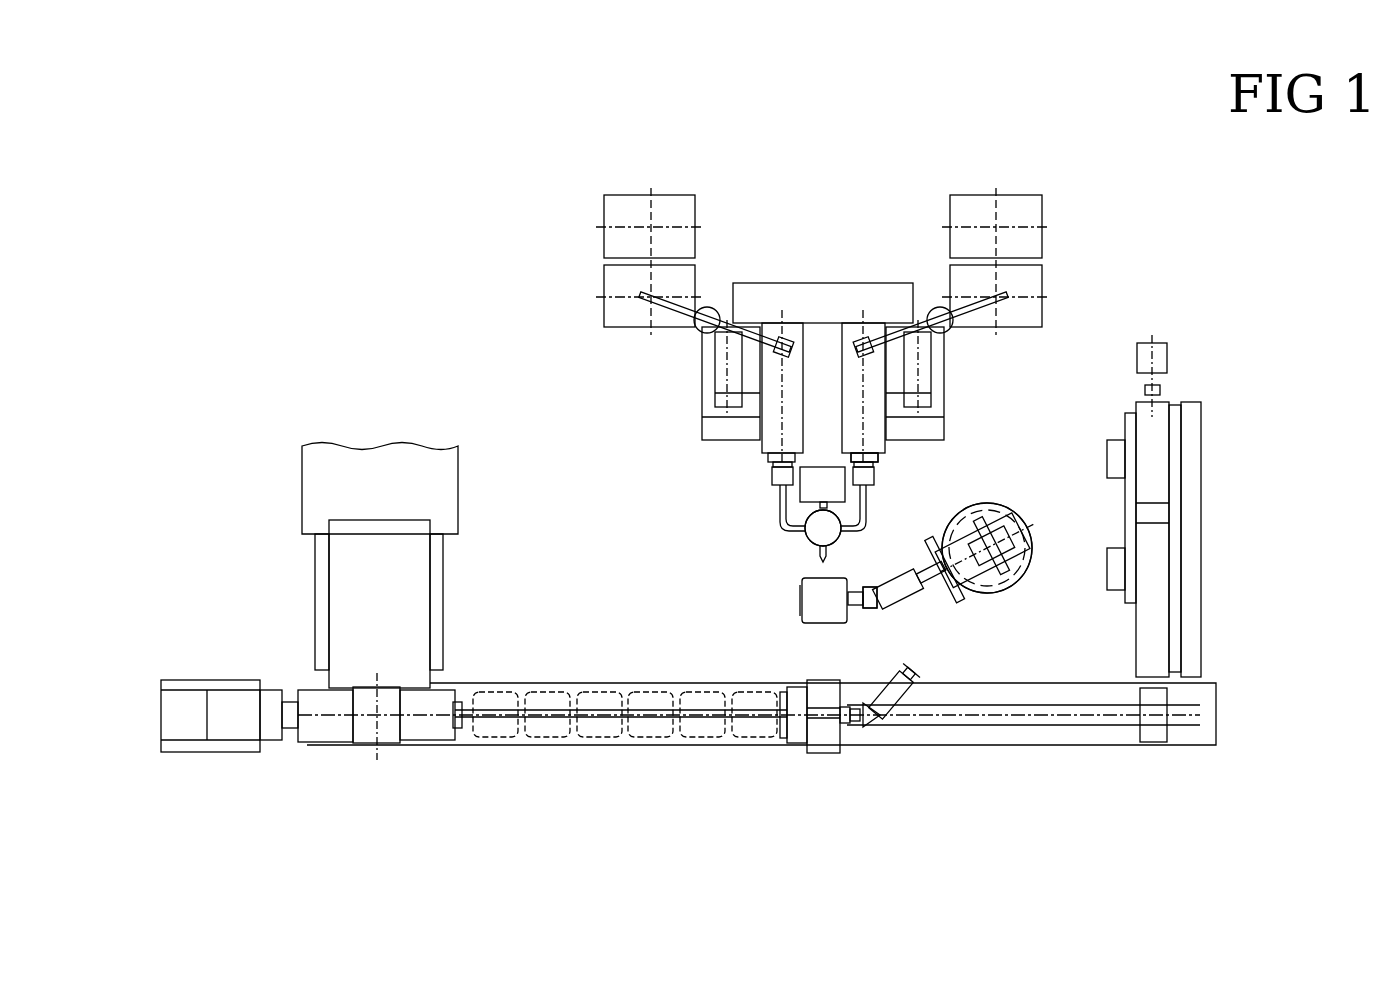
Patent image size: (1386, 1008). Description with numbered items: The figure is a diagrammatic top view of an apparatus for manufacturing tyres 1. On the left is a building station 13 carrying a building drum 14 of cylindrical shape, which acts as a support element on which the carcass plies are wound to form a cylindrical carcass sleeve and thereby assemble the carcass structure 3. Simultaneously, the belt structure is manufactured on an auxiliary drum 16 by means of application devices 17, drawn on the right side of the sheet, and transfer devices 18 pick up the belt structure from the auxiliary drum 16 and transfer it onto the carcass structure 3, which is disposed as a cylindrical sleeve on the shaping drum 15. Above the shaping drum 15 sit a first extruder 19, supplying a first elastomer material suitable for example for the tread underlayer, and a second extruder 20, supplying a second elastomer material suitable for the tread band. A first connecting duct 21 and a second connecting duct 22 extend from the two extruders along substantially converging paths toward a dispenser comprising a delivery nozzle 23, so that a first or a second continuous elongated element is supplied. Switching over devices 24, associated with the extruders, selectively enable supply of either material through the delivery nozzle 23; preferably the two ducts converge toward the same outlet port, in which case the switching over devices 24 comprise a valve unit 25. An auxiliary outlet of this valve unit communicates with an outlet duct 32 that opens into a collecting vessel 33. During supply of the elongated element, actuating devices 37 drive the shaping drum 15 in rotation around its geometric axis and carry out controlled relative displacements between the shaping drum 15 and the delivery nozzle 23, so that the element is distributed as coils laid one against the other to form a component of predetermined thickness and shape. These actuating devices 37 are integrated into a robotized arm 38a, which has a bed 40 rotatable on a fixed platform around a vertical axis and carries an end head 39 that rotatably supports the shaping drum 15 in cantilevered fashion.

The apparatus for manufacturing tyres 1 is at (447, 285).
The carcass structure 3 is at (599, 728).
The building station 13 is at (283, 545).
The building drum 14 is at (368, 722).
The shaping drum 15 is at (817, 610).
The auxiliary drum 16 is at (1153, 733).
The application devices 17 is at (1215, 427).
The transfer devices 18 is at (817, 745).
The first extruder 19 is at (863, 477).
The second extruder 20 is at (773, 477).
The first connecting duct 21 is at (870, 500).
The second connecting duct 22 is at (780, 503).
The delivery nozzle 23 is at (823, 560).
The switching over devices 24 is at (773, 538).
The valve unit 25 is at (830, 535).
The outlet duct 32 is at (820, 507).
The collecting vessel 33 is at (818, 470).
The actuating devices 37 is at (925, 608).
The robotized arm 38a is at (1015, 507).
The end head 39 is at (862, 606).
The bed 40 is at (988, 585).